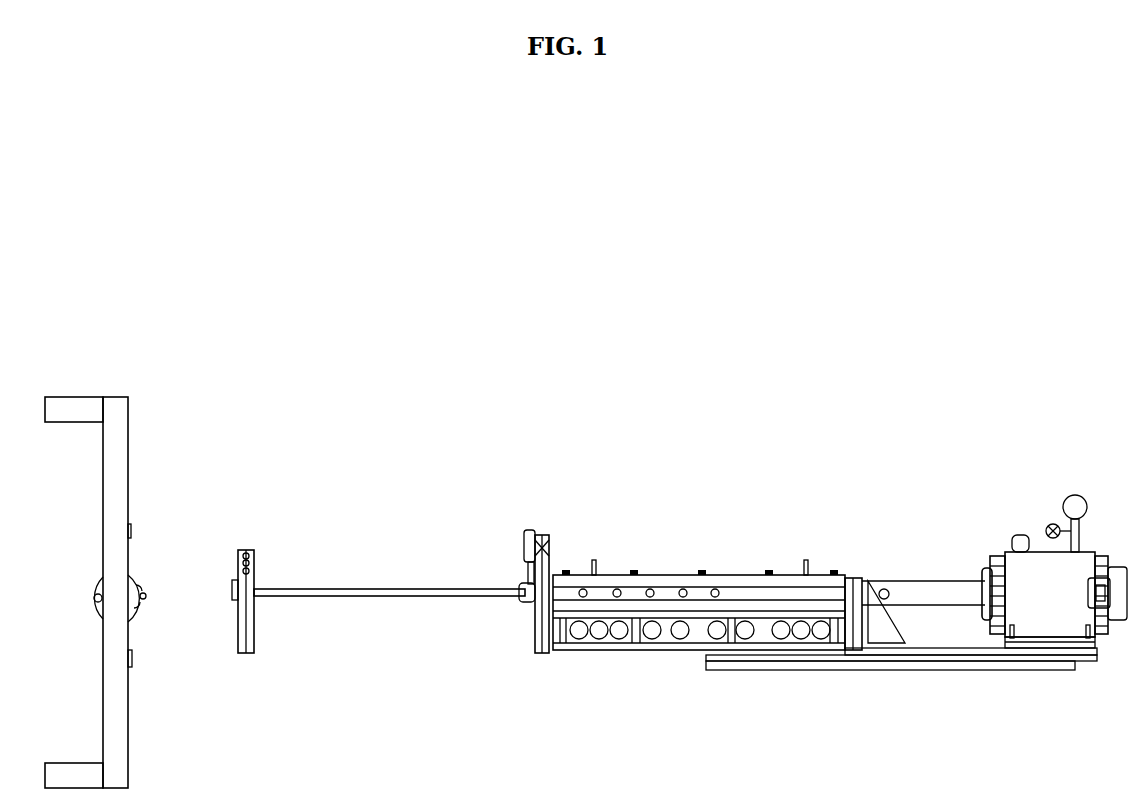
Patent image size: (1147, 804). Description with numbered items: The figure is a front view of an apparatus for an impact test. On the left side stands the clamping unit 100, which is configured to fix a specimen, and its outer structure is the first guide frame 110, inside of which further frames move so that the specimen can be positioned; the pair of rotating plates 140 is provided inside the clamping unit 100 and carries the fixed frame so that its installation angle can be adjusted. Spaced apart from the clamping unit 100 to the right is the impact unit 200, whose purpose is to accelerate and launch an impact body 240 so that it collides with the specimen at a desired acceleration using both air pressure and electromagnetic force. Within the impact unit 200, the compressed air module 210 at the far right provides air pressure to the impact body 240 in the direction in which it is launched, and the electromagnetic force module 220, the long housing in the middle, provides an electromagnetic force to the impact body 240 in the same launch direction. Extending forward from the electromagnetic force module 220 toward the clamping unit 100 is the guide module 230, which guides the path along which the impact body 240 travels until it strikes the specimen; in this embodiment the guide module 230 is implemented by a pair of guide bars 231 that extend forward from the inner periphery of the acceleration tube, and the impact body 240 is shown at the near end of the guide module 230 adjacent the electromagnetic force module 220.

The clamping unit 100 is at (122, 382).
The first guide frame 110 is at (118, 498).
The rotating plates 140 is at (145, 566).
The impact unit 200 is at (679, 605).
The compressed air module 210 is at (966, 555).
The electromagnetic force module 220 is at (733, 571).
The guide module 230 is at (315, 591).
The guide bars 231 is at (389, 592).
The impact body 240 is at (528, 604).